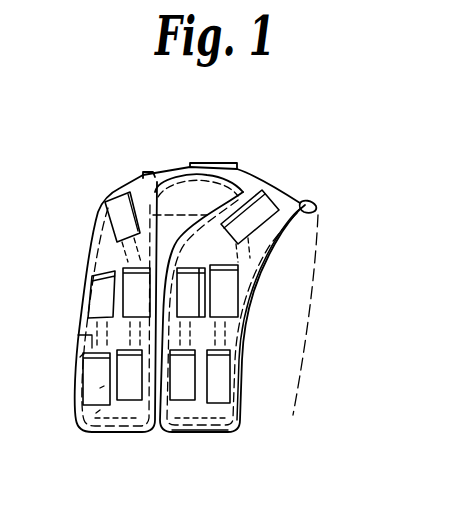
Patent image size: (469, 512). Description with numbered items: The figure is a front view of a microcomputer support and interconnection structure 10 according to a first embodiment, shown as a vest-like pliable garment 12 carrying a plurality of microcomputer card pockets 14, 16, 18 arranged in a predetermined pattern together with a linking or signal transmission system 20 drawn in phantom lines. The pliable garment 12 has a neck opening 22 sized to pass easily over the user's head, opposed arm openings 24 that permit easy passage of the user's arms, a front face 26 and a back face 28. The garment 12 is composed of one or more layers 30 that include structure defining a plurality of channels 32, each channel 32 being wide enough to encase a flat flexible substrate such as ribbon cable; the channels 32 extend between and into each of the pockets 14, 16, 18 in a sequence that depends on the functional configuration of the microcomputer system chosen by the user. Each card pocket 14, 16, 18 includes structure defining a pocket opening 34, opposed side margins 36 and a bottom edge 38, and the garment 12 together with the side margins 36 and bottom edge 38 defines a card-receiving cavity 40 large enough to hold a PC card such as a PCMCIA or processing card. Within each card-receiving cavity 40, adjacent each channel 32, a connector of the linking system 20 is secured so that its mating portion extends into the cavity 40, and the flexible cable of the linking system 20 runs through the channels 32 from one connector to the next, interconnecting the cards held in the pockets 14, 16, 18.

The microcomputer support and interconnection structure 10 is at (312, 160).
The pliable garment 12 is at (320, 205).
The microcomputer card pocket 14 is at (193, 250).
The microcomputer card pocket 16 is at (240, 293).
The microcomputer card pocket 18 is at (115, 196).
The linking or signal transmission system 20 is at (80, 337).
The neck opening 22 is at (181, 193).
The arm openings 24 is at (91, 249).
The front face 26 is at (217, 433).
The back face 28 is at (290, 413).
The layers 30 is at (243, 393).
The channels 32 is at (227, 328).
The pocket opening 34 is at (80, 357).
The opposed side margins 36 is at (100, 388).
The bottom edge 38 is at (96, 413).
The card-receiving cavity 40 is at (233, 350).